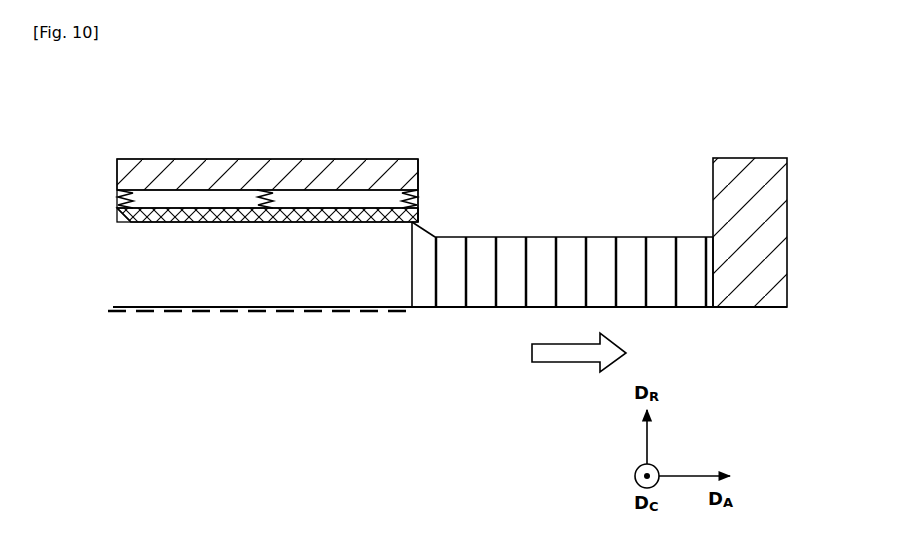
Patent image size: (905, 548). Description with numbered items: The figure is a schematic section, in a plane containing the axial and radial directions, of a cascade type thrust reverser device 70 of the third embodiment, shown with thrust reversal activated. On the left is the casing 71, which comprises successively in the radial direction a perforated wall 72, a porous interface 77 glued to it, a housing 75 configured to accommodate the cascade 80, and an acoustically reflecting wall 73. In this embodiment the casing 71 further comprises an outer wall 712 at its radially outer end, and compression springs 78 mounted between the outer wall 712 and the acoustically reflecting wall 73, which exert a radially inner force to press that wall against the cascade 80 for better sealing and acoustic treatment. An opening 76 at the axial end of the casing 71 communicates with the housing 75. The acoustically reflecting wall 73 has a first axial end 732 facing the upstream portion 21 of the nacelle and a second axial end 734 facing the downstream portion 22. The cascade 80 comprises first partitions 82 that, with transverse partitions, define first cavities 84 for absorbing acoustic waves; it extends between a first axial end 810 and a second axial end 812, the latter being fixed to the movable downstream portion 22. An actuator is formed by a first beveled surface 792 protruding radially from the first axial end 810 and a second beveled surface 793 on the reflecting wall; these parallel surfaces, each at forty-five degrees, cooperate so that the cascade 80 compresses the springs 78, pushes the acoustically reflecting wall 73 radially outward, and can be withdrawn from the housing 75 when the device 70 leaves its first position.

The upstream portion 21 is at (398, 170).
The downstream portion 22 is at (753, 170).
The thrust reverser device 70 is at (269, 140).
The casing 71 is at (118, 177).
The outer wall 712 is at (150, 188).
The perforated wall 72 is at (160, 313).
The acoustically reflecting wall 73 is at (235, 224).
The first axial end 732 is at (423, 216).
The second axial end 734 is at (121, 220).
The housing 75 is at (176, 265).
The opening 76 is at (407, 267).
The porous interface 77 is at (125, 305).
The compression springs 78 is at (248, 203).
The first beveled surface 792 is at (412, 228).
The second beveled surface 793 is at (116, 214).
The cascade 80 is at (594, 221).
The first axial end 810 is at (422, 312).
The second axial end 812 is at (704, 229).
The first partitions 82 is at (557, 254).
The first cavities 84 is at (511, 280).